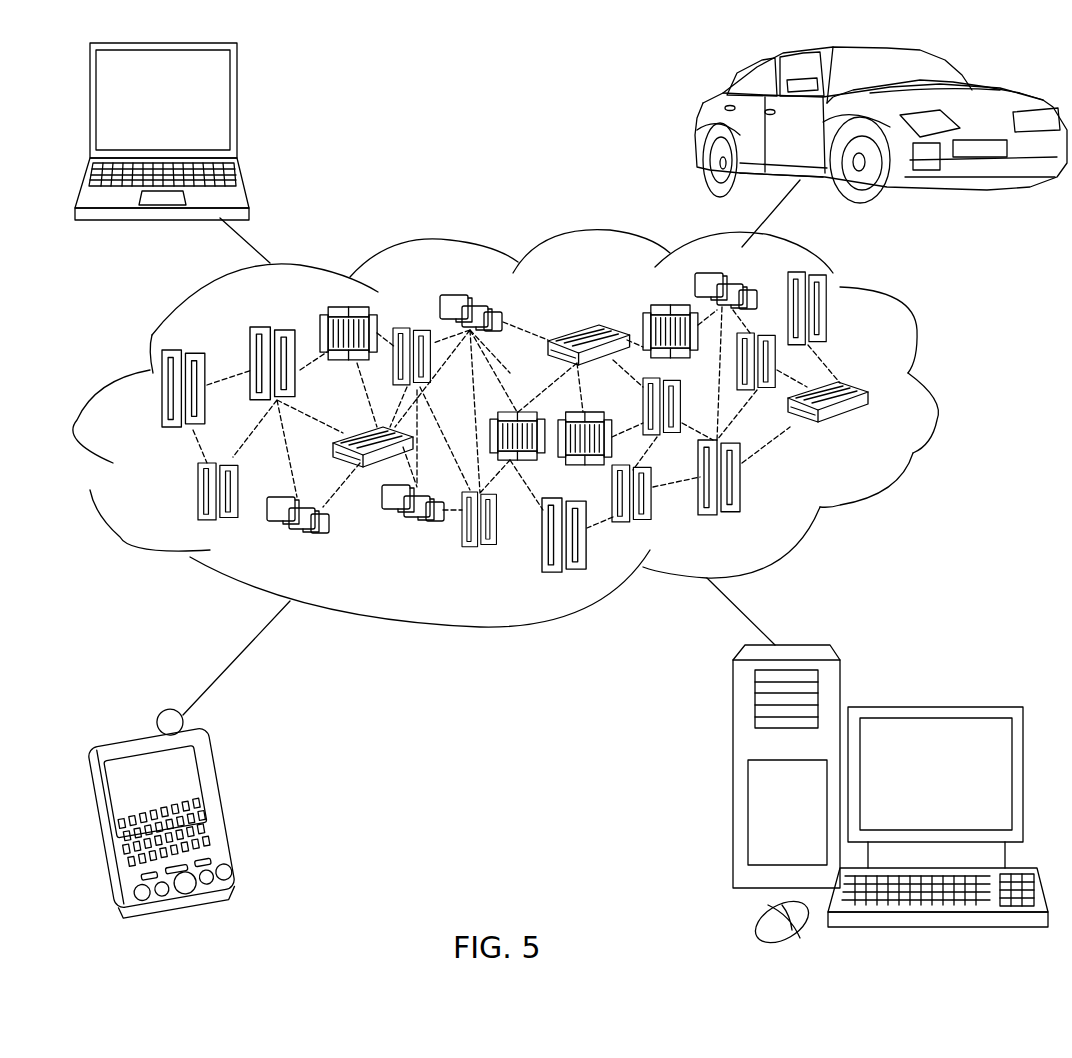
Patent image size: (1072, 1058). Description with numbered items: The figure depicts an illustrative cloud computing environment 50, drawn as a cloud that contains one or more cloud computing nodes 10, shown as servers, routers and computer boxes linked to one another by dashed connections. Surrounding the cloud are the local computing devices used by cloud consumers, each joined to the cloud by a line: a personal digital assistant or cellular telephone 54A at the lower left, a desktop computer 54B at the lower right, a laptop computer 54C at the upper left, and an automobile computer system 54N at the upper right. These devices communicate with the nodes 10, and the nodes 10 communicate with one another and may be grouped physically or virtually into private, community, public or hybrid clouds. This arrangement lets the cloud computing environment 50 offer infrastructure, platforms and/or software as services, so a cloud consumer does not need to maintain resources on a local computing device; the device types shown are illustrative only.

The cloud computing node 10 is at (884, 436).
The cloud computing environment 50 is at (937, 402).
The personal digital assistant or cellular telephone 54A is at (223, 807).
The desktop computer 54B is at (938, 705).
The laptop computer 54C is at (233, 108).
The automobile computer system 54N is at (703, 128).